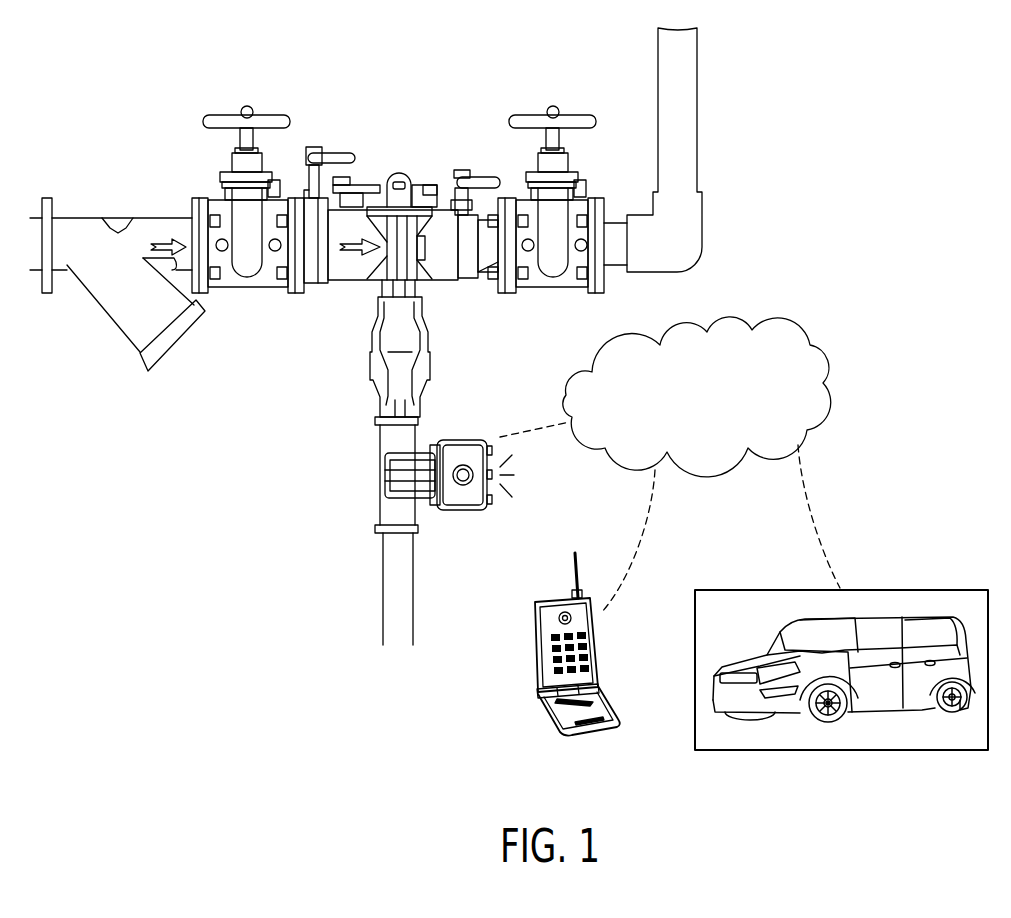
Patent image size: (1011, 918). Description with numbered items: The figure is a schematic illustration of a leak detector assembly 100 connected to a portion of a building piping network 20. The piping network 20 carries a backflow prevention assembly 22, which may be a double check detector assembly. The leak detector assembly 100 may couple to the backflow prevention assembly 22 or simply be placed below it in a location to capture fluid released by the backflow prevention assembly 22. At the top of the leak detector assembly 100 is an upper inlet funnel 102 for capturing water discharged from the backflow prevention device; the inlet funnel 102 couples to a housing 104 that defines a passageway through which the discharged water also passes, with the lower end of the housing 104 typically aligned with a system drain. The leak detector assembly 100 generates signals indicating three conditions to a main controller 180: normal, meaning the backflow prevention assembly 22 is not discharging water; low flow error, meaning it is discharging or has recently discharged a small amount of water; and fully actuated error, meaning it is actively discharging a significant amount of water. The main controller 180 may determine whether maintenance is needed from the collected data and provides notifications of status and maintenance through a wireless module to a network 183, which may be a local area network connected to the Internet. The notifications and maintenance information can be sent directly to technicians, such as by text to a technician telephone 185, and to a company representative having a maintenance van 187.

The building piping network 20 is at (700, 87).
The backflow prevention assembly 22 is at (481, 165).
The leak detector assembly 100 is at (366, 512).
The upper inlet funnel 102 is at (368, 363).
The housing 104 is at (390, 443).
The main controller 180 is at (467, 512).
The network 183 is at (790, 322).
The technician telephone 185 is at (555, 723).
The maintenance van 187 is at (937, 628).